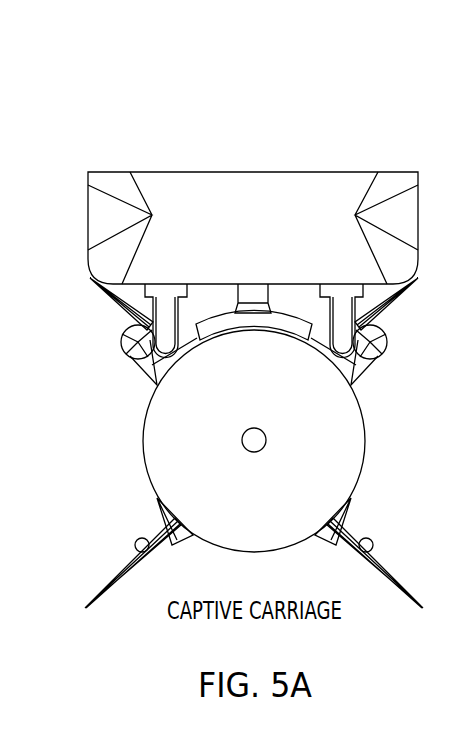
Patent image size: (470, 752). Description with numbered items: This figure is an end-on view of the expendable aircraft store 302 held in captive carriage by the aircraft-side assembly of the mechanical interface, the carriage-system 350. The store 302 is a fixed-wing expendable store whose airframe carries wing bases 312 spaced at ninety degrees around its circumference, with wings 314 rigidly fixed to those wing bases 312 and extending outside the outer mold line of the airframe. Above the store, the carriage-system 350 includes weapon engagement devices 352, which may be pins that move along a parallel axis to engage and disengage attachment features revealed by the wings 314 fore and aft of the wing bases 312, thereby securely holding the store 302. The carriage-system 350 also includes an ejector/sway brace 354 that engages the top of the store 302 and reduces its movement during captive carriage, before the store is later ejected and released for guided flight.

The carriage-system 350 is at (88, 213).
The ejector/sway brace 354 is at (270, 297).
The weapon engagement devices 352 is at (376, 328).
The expendable aircraft store 302 is at (143, 446).
The wing bases 312 is at (150, 524).
The wings 314 is at (113, 571).